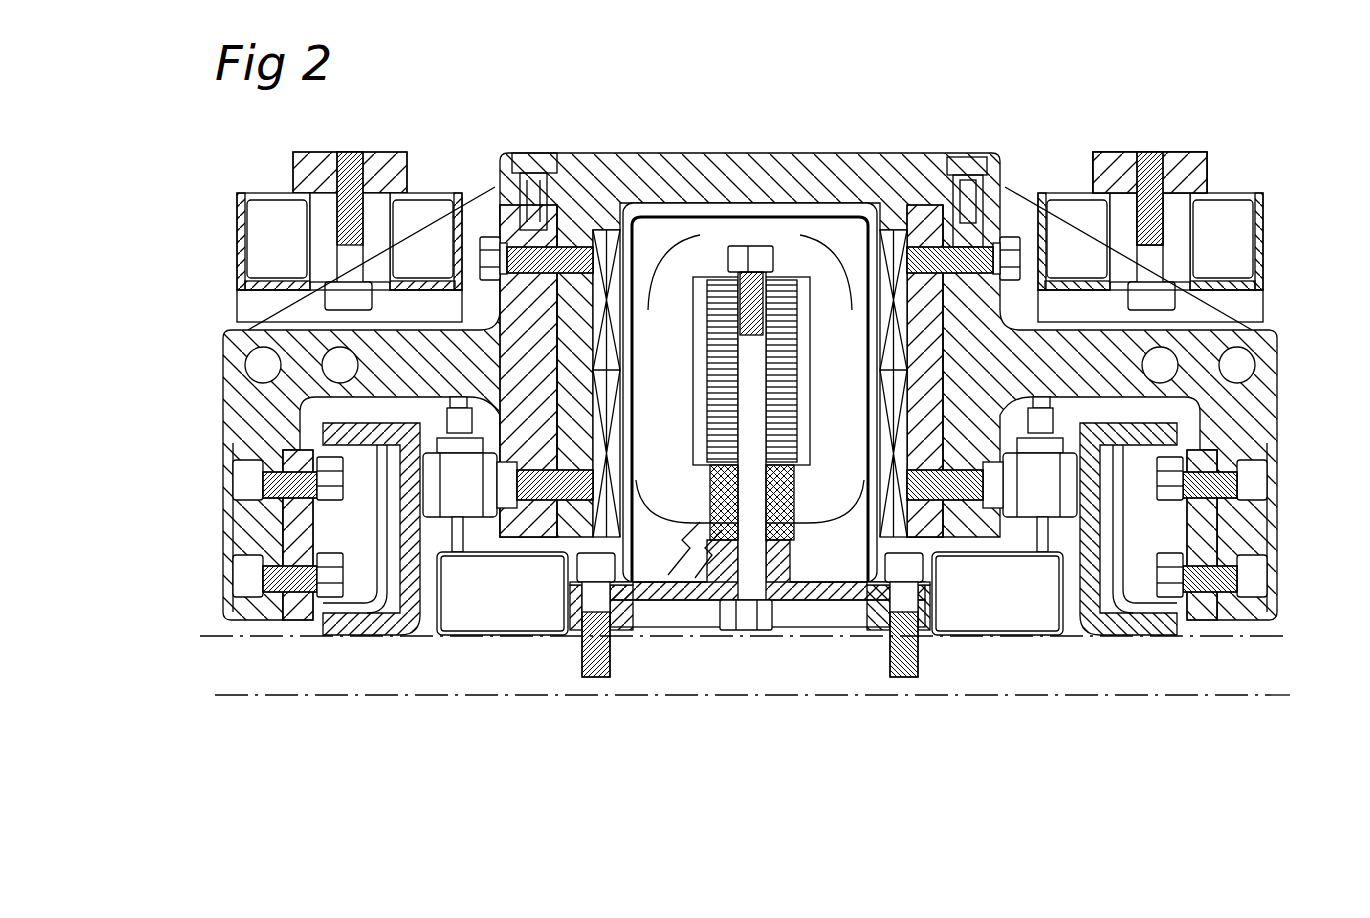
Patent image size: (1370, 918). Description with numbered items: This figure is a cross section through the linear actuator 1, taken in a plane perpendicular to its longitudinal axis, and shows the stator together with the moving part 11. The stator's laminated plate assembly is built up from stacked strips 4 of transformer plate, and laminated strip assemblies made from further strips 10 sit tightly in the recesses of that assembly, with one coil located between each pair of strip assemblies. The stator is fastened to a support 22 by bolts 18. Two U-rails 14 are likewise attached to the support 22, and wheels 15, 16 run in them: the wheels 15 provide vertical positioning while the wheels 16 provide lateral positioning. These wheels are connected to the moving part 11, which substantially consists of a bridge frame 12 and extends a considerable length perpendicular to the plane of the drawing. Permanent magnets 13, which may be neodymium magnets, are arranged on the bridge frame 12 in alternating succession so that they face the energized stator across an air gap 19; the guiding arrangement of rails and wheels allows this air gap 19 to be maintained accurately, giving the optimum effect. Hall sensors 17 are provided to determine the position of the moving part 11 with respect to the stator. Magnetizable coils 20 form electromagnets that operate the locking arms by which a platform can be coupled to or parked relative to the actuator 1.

The linear actuator 1 is at (545, 137).
The strips 4 is at (776, 262).
The strips 10 is at (852, 527).
The moving part 11 is at (935, 138).
The bridge frame 12 is at (995, 138).
The permanent magnets 13 is at (632, 600).
The U-rails 14 is at (420, 603).
The wheels 15 is at (357, 603).
The wheels 16 is at (373, 612).
The Hall sensors 17 is at (462, 600).
The bolts 18 is at (740, 617).
The air gap 19 is at (860, 545).
The magnetizable coils 20 is at (425, 213).
The support 22 is at (1145, 688).